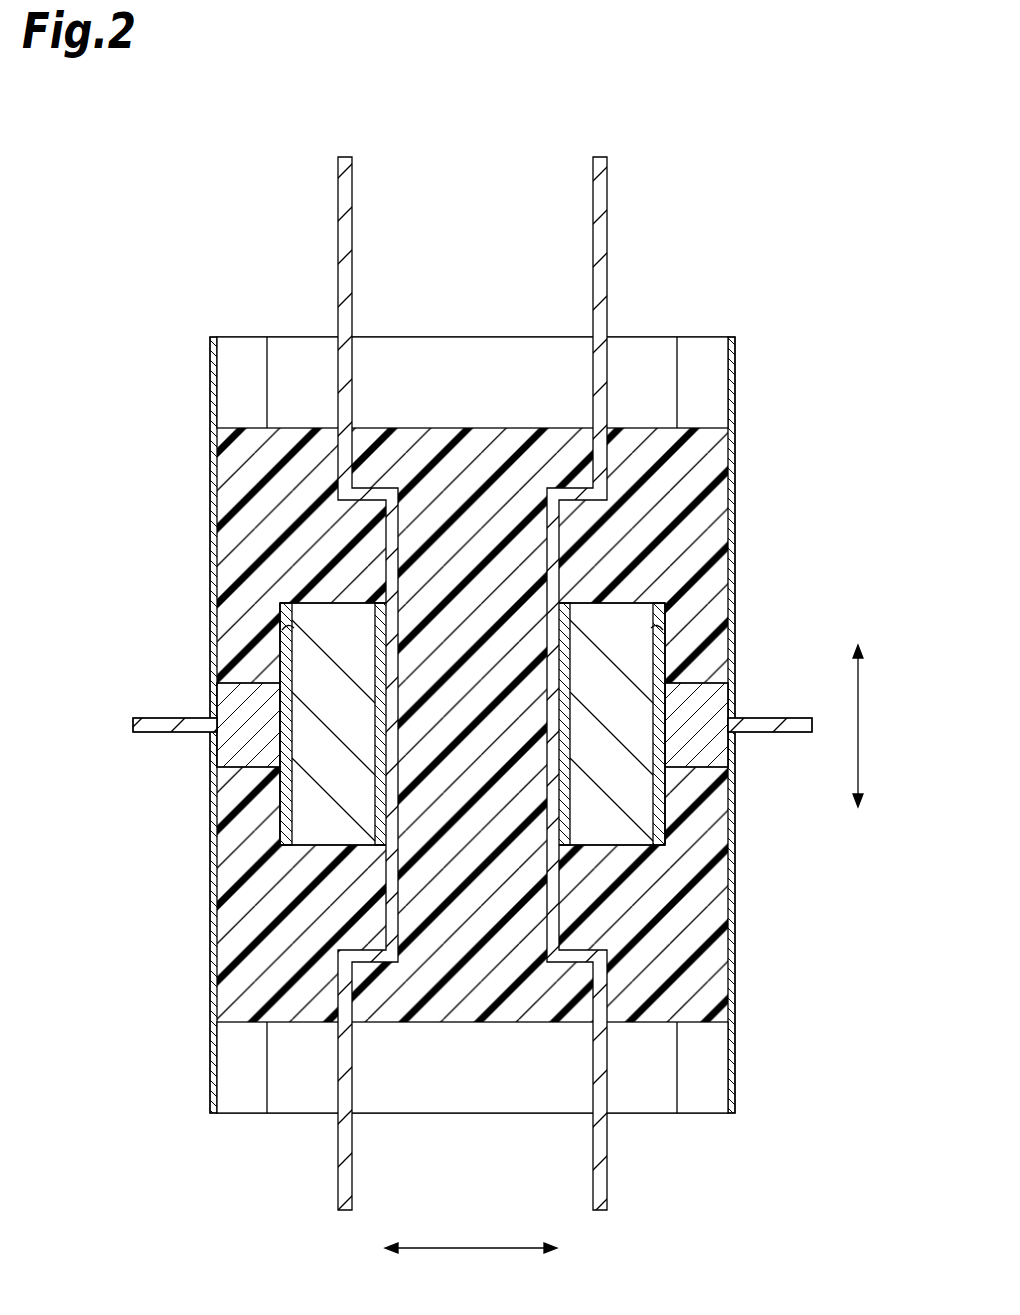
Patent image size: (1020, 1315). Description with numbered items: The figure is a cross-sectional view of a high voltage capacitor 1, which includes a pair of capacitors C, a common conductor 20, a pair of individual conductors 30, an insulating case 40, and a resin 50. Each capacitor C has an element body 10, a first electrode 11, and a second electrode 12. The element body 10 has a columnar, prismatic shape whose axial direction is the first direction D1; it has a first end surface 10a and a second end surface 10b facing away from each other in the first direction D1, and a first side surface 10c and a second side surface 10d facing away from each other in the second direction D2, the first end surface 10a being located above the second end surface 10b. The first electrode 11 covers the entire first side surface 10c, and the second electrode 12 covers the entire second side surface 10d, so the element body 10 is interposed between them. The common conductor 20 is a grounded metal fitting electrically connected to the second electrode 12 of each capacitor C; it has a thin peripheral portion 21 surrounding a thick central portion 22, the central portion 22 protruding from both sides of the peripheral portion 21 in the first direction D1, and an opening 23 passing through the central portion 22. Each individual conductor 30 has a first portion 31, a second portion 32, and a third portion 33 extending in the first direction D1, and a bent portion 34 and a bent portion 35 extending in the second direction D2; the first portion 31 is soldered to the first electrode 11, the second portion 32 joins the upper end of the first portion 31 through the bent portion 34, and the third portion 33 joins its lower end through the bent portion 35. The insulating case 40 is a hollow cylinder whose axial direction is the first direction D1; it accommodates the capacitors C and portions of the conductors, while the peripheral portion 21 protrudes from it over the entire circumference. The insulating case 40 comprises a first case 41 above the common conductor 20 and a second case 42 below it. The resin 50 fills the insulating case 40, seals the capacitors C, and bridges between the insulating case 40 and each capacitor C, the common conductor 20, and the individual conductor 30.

The high voltage capacitor 1 is at (770, 280).
The element body 10 is at (469, 609).
The first end surface 10a is at (318, 603).
The second end surface 10b is at (330, 848).
The first side surface 10c is at (420, 620).
The second side surface 10d is at (280, 735).
The first electrode 11 is at (300, 838).
The second electrode 12 is at (287, 805).
The common conductor 20 is at (464, 684).
The peripheral portion 21 is at (778, 718).
The central portion 22 is at (697, 683).
The opening 23 is at (645, 695).
The individual conductor 30 is at (470, 683).
The first portion 31 is at (386, 540).
The second portion 32 is at (338, 270).
The third portion 33 is at (338, 1162).
The bent portion 34 is at (365, 492).
The bent portion 35 is at (343, 990).
The insulating case 40 is at (517, 718).
The first case 41 is at (735, 372).
The second case 42 is at (735, 1078).
The resin 50 is at (457, 430).
The capacitor C is at (285, 625).
The first direction D1 is at (883, 726).
The second direction D2 is at (471, 1266).